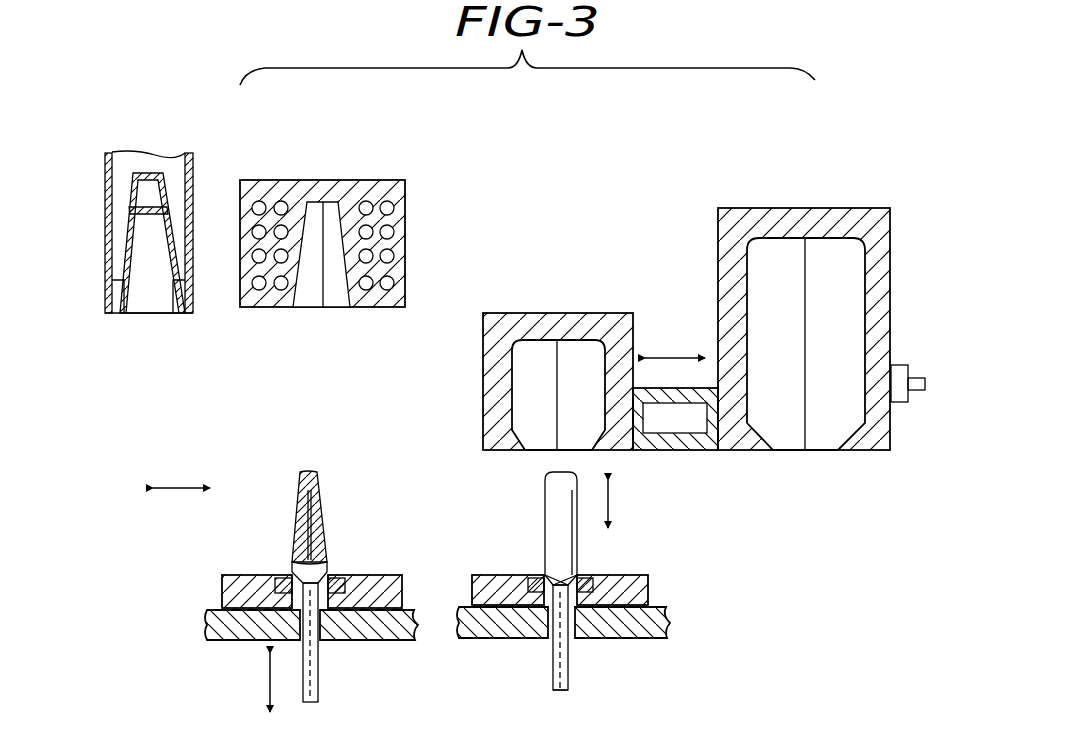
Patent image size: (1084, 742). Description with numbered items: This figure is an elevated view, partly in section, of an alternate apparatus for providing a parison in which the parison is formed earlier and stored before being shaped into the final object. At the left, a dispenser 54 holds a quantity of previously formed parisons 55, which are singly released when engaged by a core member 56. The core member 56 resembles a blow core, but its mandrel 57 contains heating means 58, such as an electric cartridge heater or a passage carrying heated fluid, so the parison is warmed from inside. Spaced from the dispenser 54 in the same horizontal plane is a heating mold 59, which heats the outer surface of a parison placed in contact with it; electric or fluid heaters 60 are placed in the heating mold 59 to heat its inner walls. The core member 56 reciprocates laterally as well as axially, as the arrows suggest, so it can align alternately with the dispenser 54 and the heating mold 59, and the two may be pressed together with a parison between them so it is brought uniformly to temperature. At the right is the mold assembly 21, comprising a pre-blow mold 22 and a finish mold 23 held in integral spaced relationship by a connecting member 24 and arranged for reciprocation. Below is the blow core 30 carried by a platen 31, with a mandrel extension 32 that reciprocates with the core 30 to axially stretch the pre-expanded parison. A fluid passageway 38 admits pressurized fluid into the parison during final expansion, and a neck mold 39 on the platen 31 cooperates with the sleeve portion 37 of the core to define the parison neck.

The mold assembly 21 is at (704, 319).
The pre-blow mold 22 is at (603, 322).
The finish mold 23 is at (774, 207).
The connecting member 24 is at (692, 446).
The blow core 30 is at (546, 517).
The platen 31 is at (662, 632).
The mandrel extension 32 is at (570, 670).
The sleeve portion 37 is at (578, 582).
The fluid passageway 38 is at (563, 692).
The neck mold 39 is at (640, 588).
The dispenser 54 is at (190, 163).
The previously formed parisons 55 is at (183, 313).
The core member 56 is at (310, 642).
The mandrel 57 is at (340, 506).
The heating means 58 is at (320, 500).
The heating mold 59 is at (398, 275).
The heaters 60 is at (262, 200).